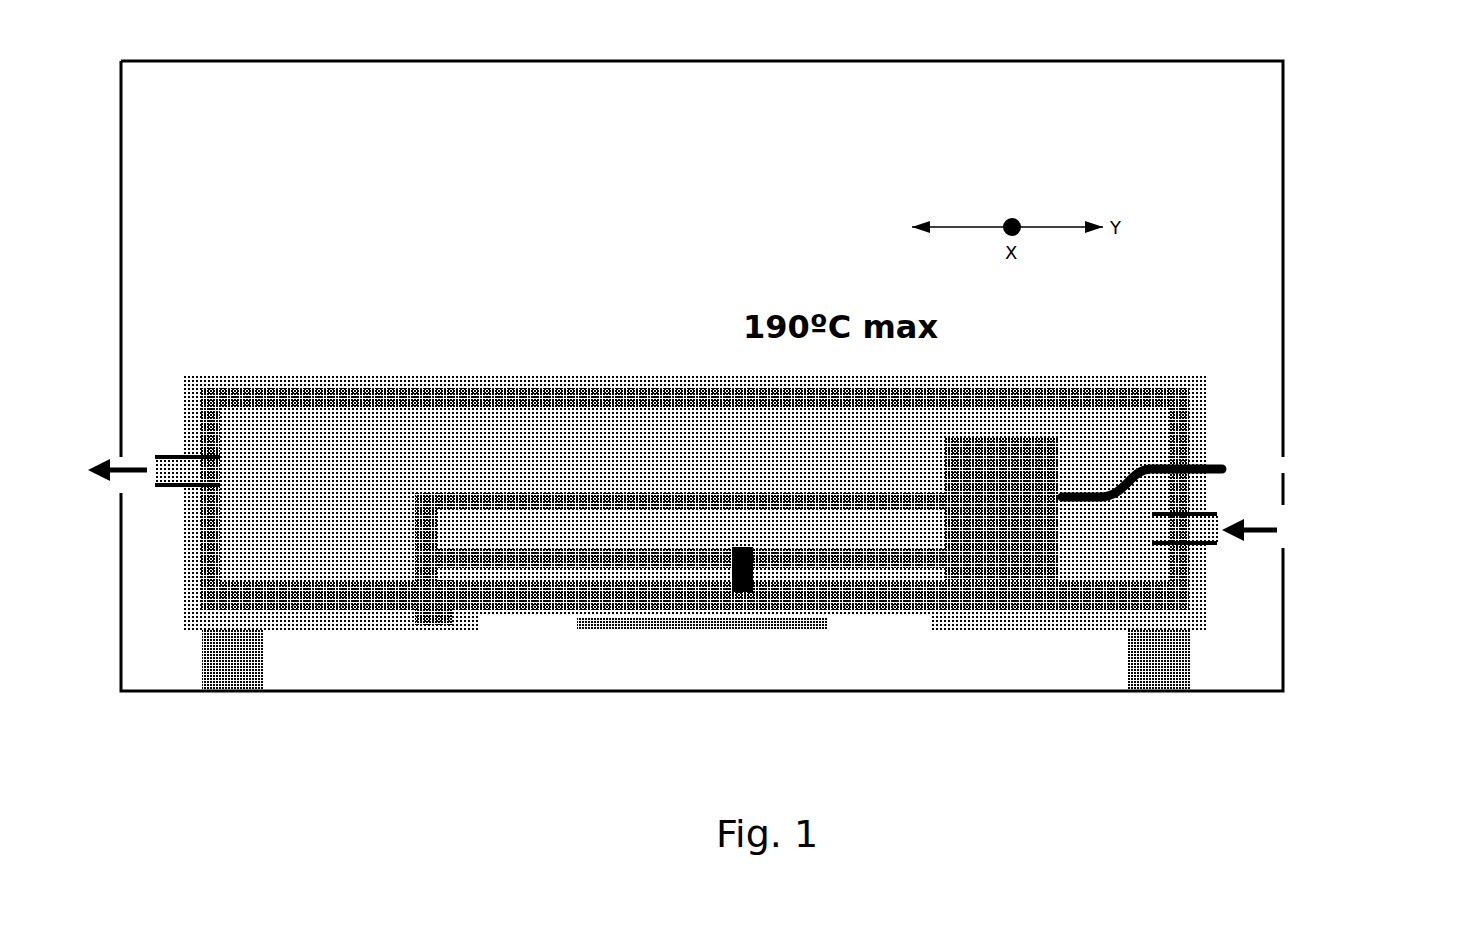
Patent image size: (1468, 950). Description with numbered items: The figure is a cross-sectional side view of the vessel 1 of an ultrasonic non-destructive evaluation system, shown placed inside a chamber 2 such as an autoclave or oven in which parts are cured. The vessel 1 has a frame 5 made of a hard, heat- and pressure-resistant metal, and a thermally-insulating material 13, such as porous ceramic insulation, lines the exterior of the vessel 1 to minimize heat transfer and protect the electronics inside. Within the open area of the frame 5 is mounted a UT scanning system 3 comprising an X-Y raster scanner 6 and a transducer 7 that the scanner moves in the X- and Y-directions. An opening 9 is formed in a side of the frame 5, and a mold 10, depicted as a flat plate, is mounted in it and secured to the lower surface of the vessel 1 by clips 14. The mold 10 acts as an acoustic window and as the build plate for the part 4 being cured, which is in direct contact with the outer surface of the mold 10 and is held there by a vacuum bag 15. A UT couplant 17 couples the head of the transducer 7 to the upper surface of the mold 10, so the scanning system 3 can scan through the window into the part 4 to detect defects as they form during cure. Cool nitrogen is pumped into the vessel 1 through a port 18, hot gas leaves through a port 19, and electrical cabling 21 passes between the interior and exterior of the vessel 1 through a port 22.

The vessel 1 is at (296, 288).
The chamber 2 is at (1135, 60).
The UT scanning system 3 is at (786, 444).
The part 4 is at (750, 625).
The frame 5 is at (335, 397).
The X-Y raster scanner 6 is at (1058, 455).
The transducer 7 is at (742, 547).
The opening 9 is at (536, 664).
The mold 10 is at (835, 607).
The thermally-insulating material 13 is at (1086, 380).
The clips 14 is at (481, 618).
The vacuum bag 15 is at (683, 633).
The UT couplant 17 is at (628, 585).
The port 18 is at (1218, 543).
The port 19 is at (172, 455).
The electrical cabling 21 is at (1212, 467).
The port 22 is at (1207, 468).